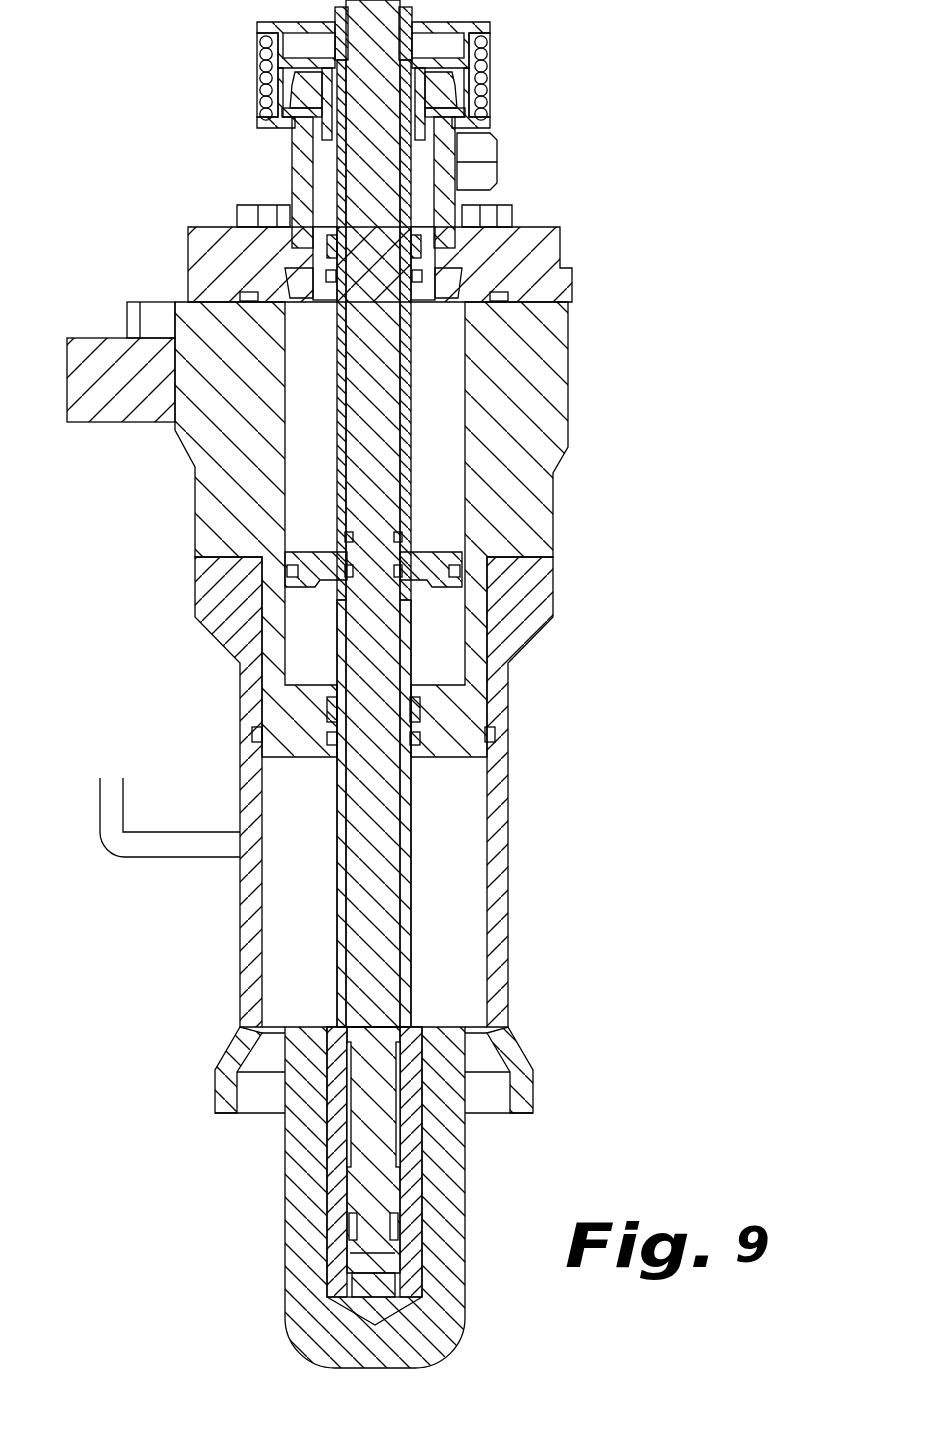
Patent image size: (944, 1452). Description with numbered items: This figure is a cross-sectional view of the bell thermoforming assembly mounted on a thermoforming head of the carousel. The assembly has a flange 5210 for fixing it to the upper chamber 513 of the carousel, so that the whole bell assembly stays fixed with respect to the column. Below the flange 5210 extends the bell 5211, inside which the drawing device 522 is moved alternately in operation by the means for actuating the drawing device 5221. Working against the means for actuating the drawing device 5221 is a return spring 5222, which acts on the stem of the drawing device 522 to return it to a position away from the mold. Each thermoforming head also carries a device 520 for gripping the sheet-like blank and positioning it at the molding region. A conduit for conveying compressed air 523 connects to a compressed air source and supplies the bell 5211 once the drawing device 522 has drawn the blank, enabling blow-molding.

The return spring 5222 is at (490, 77).
The flange 5210 is at (524, 396).
The means for actuating the drawing device 5221 is at (437, 553).
The device for gripping the sheet-like blank 520 is at (205, 682).
The bell 5211 is at (247, 711).
The upper chamber 513 is at (118, 392).
The conduit for conveying compressed air 523 is at (157, 872).
The drawing device 522 is at (300, 1243).